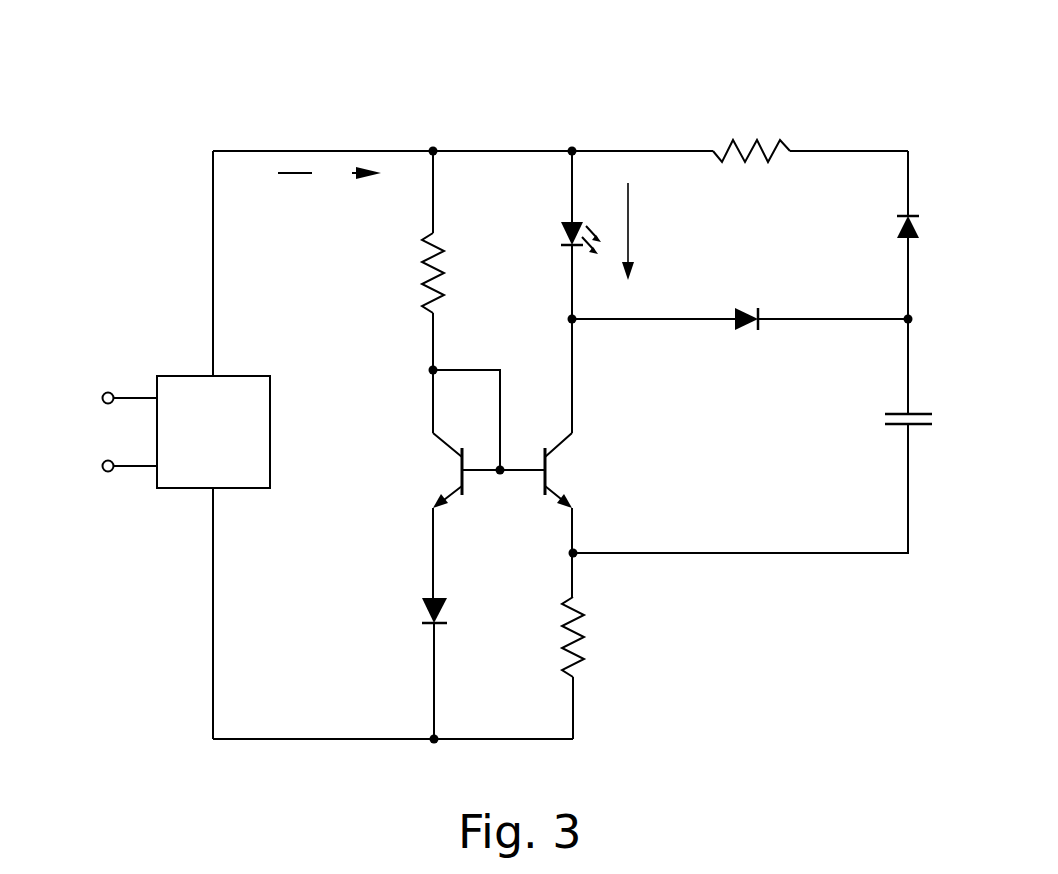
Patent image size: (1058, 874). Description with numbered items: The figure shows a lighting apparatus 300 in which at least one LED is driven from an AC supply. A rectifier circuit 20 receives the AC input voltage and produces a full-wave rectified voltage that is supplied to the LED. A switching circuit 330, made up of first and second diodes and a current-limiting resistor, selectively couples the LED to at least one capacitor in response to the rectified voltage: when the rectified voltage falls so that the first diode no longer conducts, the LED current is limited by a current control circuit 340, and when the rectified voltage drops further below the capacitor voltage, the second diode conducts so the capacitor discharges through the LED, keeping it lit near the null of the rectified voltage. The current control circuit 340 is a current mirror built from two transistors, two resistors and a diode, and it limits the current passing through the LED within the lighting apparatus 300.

The lighting apparatus 300 is at (212, 73).
The rectifier circuit 20 is at (193, 376).
The switching circuit 330 is at (648, 127).
The current control circuit 340 is at (393, 543).